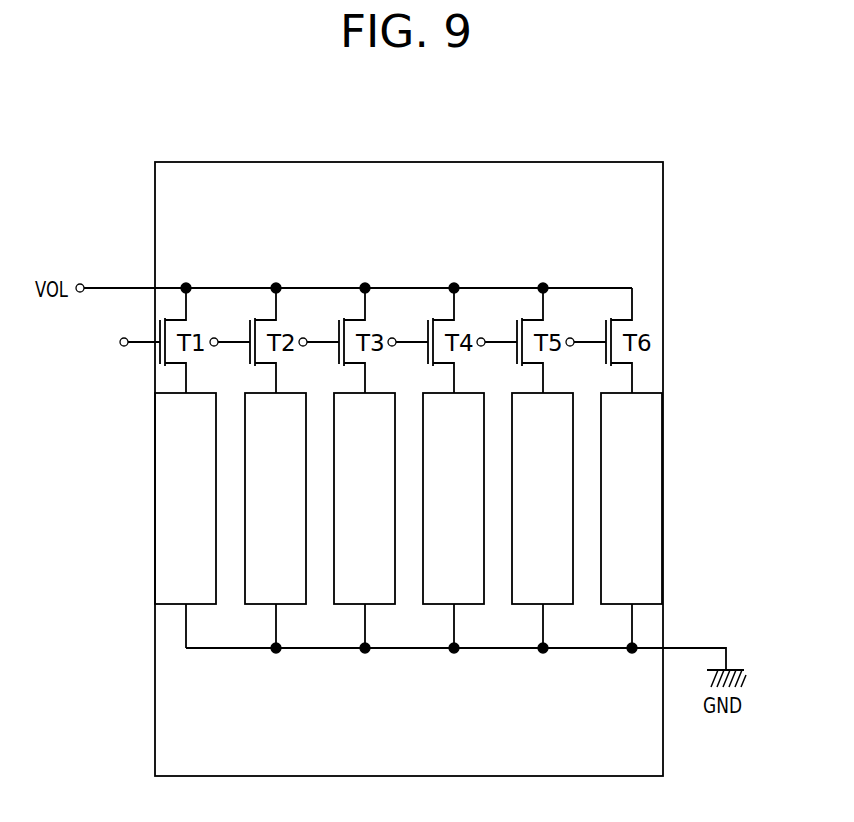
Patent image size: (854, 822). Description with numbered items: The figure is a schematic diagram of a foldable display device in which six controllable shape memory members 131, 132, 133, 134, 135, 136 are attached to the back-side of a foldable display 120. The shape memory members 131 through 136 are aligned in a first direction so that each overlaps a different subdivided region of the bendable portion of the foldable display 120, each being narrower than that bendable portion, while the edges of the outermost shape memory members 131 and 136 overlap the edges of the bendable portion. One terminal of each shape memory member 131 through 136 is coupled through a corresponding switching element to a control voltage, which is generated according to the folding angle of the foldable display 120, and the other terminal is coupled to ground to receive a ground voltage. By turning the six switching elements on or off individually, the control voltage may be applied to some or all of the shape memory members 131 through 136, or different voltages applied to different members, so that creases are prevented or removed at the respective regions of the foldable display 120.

The foldable display 120 is at (618, 250).
The shape memory member 131 is at (168, 565).
The shape memory member 132 is at (257, 565).
The shape memory member 133 is at (347, 565).
The shape memory member 134 is at (438, 565).
The shape memory member 135 is at (525, 565).
The shape memory member 136 is at (613, 565).